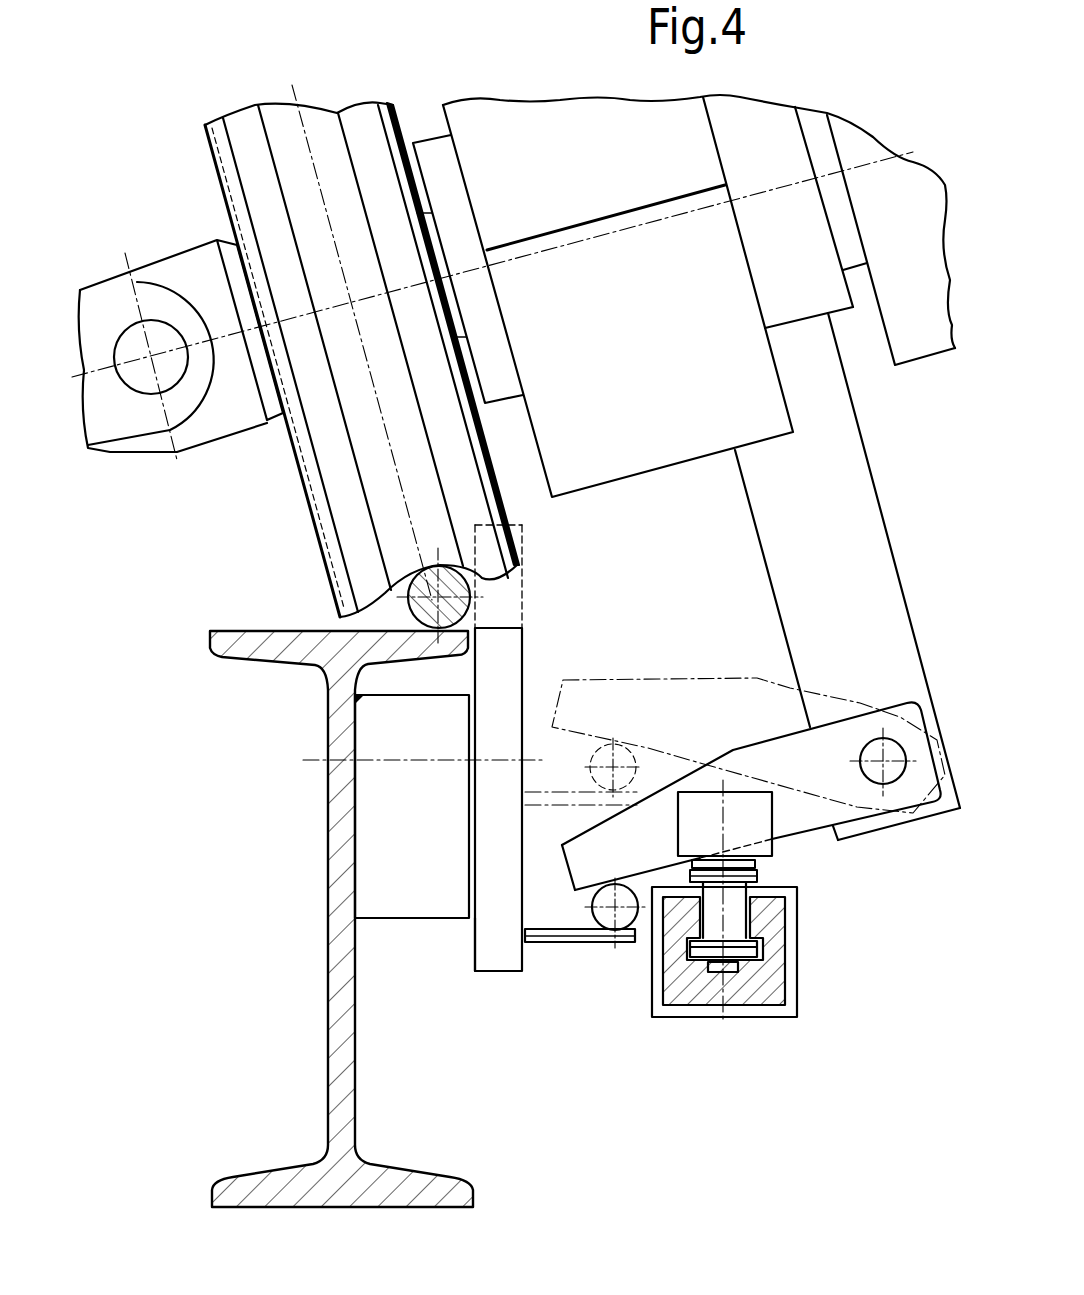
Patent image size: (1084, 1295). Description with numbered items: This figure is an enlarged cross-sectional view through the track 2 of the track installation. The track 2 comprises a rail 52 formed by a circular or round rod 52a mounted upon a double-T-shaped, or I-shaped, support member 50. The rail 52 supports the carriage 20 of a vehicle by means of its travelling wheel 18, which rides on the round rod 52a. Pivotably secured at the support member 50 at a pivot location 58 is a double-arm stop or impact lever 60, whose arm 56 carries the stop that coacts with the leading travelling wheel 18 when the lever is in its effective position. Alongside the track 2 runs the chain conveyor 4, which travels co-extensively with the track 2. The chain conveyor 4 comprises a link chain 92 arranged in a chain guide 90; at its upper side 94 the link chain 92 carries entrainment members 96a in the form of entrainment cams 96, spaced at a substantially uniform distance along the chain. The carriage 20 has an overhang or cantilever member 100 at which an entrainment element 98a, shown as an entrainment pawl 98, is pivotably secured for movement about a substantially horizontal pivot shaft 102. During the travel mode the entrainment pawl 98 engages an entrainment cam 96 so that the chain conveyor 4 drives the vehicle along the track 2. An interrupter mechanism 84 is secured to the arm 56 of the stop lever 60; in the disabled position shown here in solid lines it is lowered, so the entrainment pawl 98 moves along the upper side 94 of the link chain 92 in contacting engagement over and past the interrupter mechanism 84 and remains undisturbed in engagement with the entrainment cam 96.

The track 2 is at (291, 919).
The chain conveyor 4 is at (757, 991).
The travelling wheel 18 is at (305, 490).
The carriage 20 is at (627, 484).
The support member 50 is at (328, 837).
The rail 52 is at (407, 598).
The round rod 52a is at (472, 605).
The arm 56 is at (477, 930).
The pivot location 58 is at (453, 760).
The stop lever 60 is at (488, 975).
The interrupter mechanism 84 is at (623, 943).
The chain guide 90 is at (768, 1032).
The link chain 92 is at (763, 937).
The upper side of link chain 94 is at (765, 865).
The entrainment cam 96 is at (777, 845).
The entrainment member 96a is at (697, 825).
The entrainment pawl 98 is at (592, 868).
The entrainment element 98a is at (585, 893).
The cantilever member 100 is at (883, 517).
The pivot shaft 102 is at (862, 748).